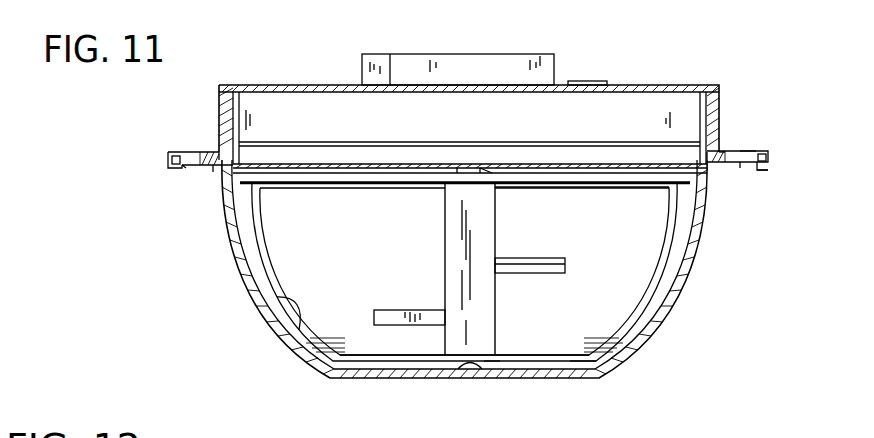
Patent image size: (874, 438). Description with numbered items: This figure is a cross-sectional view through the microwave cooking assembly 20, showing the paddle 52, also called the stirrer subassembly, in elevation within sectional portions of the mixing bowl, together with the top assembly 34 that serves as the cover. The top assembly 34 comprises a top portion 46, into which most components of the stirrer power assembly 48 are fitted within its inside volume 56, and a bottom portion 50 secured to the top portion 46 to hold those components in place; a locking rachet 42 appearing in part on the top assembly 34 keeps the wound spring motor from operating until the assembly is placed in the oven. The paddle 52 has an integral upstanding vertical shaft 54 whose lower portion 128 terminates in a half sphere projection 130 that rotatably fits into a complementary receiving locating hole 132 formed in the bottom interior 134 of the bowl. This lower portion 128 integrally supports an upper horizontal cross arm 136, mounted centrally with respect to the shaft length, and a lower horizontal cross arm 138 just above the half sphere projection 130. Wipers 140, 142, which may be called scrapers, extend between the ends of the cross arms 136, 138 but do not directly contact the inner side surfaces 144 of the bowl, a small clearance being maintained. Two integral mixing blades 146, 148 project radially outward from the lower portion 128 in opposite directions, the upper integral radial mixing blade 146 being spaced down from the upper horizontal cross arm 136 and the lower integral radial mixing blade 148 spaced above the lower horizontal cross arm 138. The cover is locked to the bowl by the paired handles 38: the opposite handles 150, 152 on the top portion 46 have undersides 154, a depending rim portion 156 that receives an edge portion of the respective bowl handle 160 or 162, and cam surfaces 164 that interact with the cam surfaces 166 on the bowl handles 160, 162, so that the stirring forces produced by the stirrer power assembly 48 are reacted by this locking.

The microwave cooking assembly 20 is at (242, 83).
The top assembly 34 is at (587, 79).
The paired handles 38 is at (165, 151).
The locking rachet 42 is at (458, 53).
The top portion 46 is at (650, 86).
The stirrer power assembly 48 is at (443, 122).
The bottom portion 50 is at (227, 205).
The paddle 52 is at (499, 220).
The integral shaft 54 is at (482, 171).
The inside volume 56 is at (325, 129).
The lower portion 128 is at (492, 366).
The half sphere projection 130 is at (450, 367).
The receiving locating hole 132 is at (472, 368).
The bottom interior 134 is at (580, 368).
The upper horizontal cross arm 136 is at (288, 188).
The lower horizontal cross arm 138 is at (387, 363).
The wiper 140 is at (672, 287).
The wiper 142 is at (240, 257).
The inner side surfaces 144 is at (293, 322).
The upper integral radial mixing blade 146 is at (402, 308).
The lower integral radial mixing blade 148 is at (520, 274).
The handle 150 is at (220, 152).
The handle 152 is at (728, 152).
The undersides 154 is at (187, 168).
The depending rim portion 156 is at (752, 168).
The handle 160 is at (213, 172).
The handle 162 is at (706, 212).
The cam surfaces 164 is at (752, 150).
The cam surfaces 166 is at (768, 165).